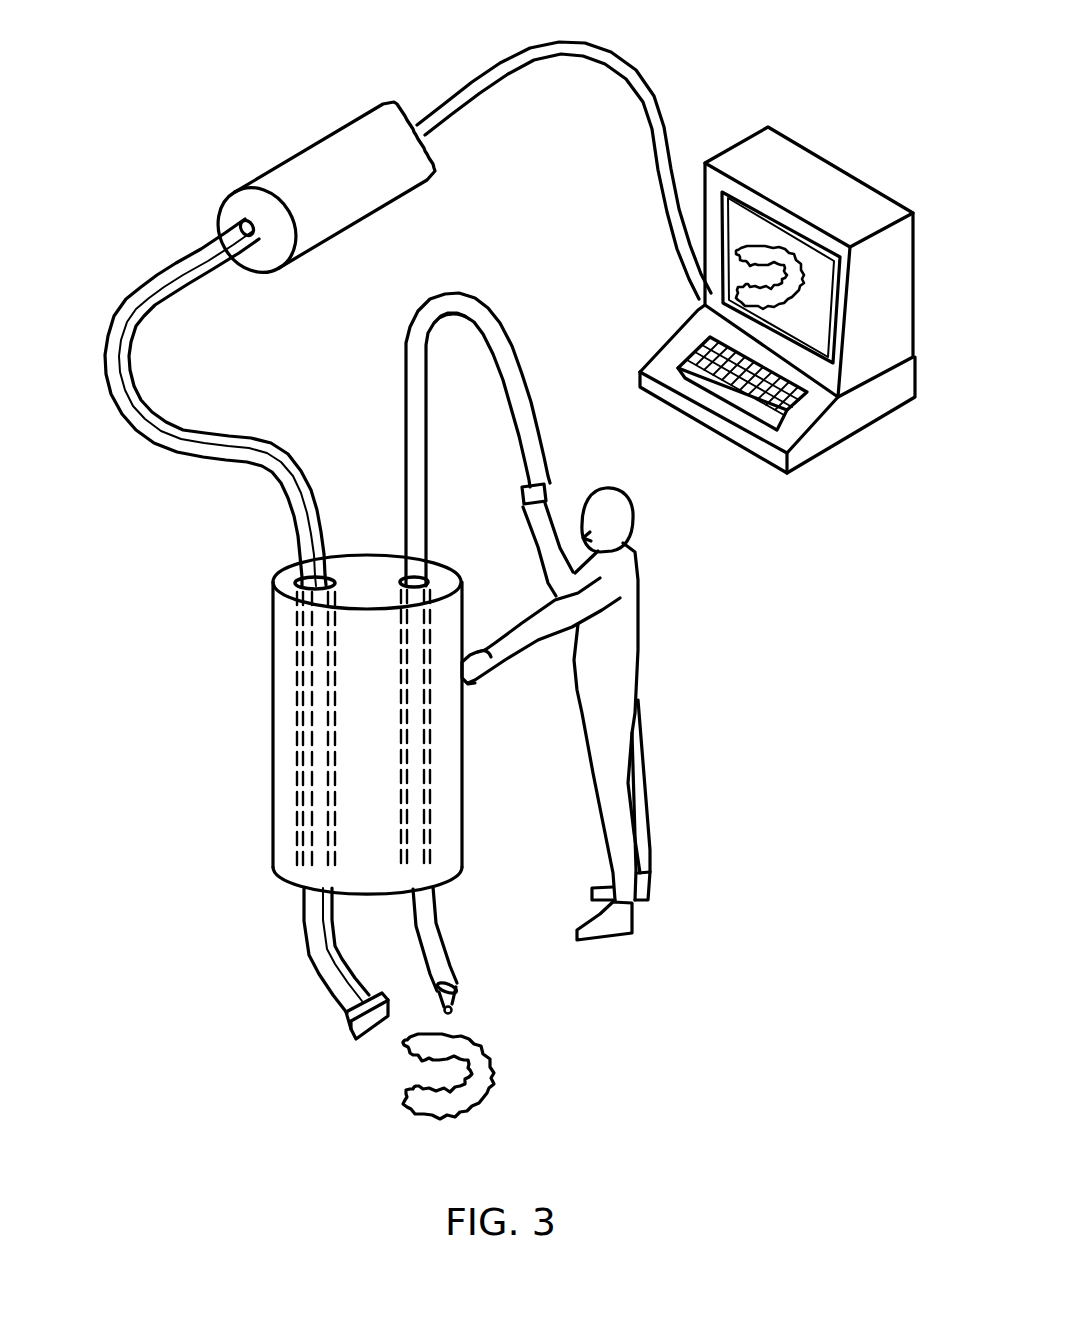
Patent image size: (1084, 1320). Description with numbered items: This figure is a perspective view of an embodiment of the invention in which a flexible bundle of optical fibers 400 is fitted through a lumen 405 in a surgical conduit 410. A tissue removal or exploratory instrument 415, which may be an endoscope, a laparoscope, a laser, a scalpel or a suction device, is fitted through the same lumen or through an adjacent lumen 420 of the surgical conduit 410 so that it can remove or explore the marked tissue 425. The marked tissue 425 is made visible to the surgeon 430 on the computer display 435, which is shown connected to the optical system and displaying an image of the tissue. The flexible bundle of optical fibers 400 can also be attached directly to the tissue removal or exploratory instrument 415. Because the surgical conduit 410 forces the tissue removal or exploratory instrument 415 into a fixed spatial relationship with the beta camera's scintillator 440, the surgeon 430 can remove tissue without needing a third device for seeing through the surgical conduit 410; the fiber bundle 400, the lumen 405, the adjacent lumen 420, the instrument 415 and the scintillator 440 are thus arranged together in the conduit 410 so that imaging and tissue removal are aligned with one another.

The flexible bundle of optical fibers 400 is at (145, 437).
The lumen 405 is at (293, 583).
The surgical conduit 410 is at (270, 803).
The tissue removal or exploratory instrument 415 is at (447, 942).
The adjacent lumen 420 is at (430, 573).
The marked tissue 425 is at (483, 1092).
The surgeon 430 is at (635, 622).
The computer display 435 is at (808, 150).
The beta camera's scintillator 440 is at (378, 1043).